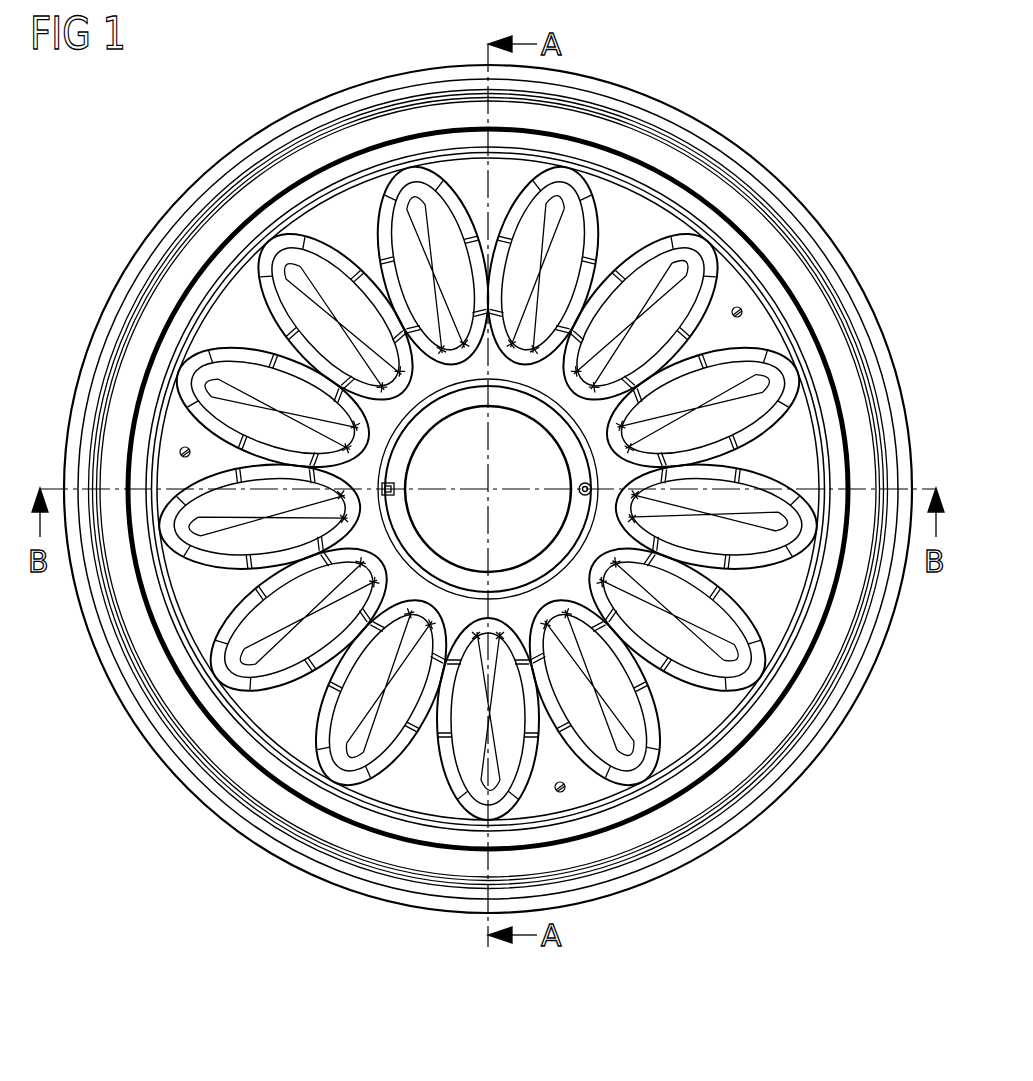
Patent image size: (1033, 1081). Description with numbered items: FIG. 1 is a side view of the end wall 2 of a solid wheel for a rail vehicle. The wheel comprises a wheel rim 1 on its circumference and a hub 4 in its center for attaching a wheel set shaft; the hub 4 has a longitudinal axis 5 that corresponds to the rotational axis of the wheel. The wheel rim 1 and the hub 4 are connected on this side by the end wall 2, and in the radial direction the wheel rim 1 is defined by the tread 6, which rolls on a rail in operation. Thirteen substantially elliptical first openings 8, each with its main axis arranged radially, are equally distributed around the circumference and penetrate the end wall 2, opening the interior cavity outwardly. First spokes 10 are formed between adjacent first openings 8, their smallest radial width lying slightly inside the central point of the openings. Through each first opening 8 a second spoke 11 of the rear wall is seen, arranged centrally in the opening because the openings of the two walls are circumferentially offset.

The wheel rim 1 is at (598, 126).
The end wall 2 is at (735, 292).
The hub 4 is at (469, 464).
The longitudinal axis 5 is at (490, 489).
The tread 6 is at (850, 303).
The first openings 8 is at (570, 299).
The first spokes 10 is at (287, 347).
The second spokes 11 is at (318, 293).